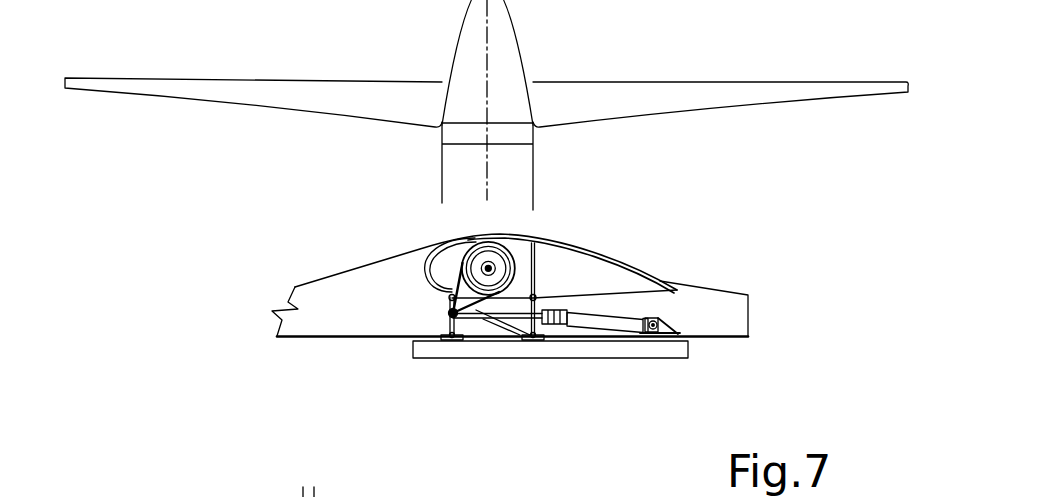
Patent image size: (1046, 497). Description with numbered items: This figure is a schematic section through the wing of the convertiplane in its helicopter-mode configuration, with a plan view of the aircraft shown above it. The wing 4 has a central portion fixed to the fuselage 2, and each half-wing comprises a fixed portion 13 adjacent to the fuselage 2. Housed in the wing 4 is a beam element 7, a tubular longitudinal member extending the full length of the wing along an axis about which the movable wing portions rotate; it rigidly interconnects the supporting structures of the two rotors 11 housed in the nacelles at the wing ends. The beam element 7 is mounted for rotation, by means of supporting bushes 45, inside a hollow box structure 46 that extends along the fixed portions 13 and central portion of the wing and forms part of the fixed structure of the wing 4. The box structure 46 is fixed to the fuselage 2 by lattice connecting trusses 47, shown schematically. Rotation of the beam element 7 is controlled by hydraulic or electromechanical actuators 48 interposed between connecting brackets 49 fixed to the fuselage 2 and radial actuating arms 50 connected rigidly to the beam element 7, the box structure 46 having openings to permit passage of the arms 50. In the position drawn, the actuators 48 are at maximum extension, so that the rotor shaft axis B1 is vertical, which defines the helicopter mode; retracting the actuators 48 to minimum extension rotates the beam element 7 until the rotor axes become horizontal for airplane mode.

The fuselage 2 is at (373, 333).
The wing 4 is at (733, 286).
The beam element 7 is at (463, 260).
The rotor 11 is at (623, 83).
The fixed portion 13 is at (663, 267).
The supporting bush 45 is at (517, 257).
The hollow box structure 46 is at (538, 278).
The lattice connecting truss 47 is at (500, 326).
The actuator 48 is at (598, 322).
The connecting bracket 49 is at (667, 335).
The radial actuating arm 50 is at (450, 298).
The axis of rotor shaft B1 is at (486, 43).